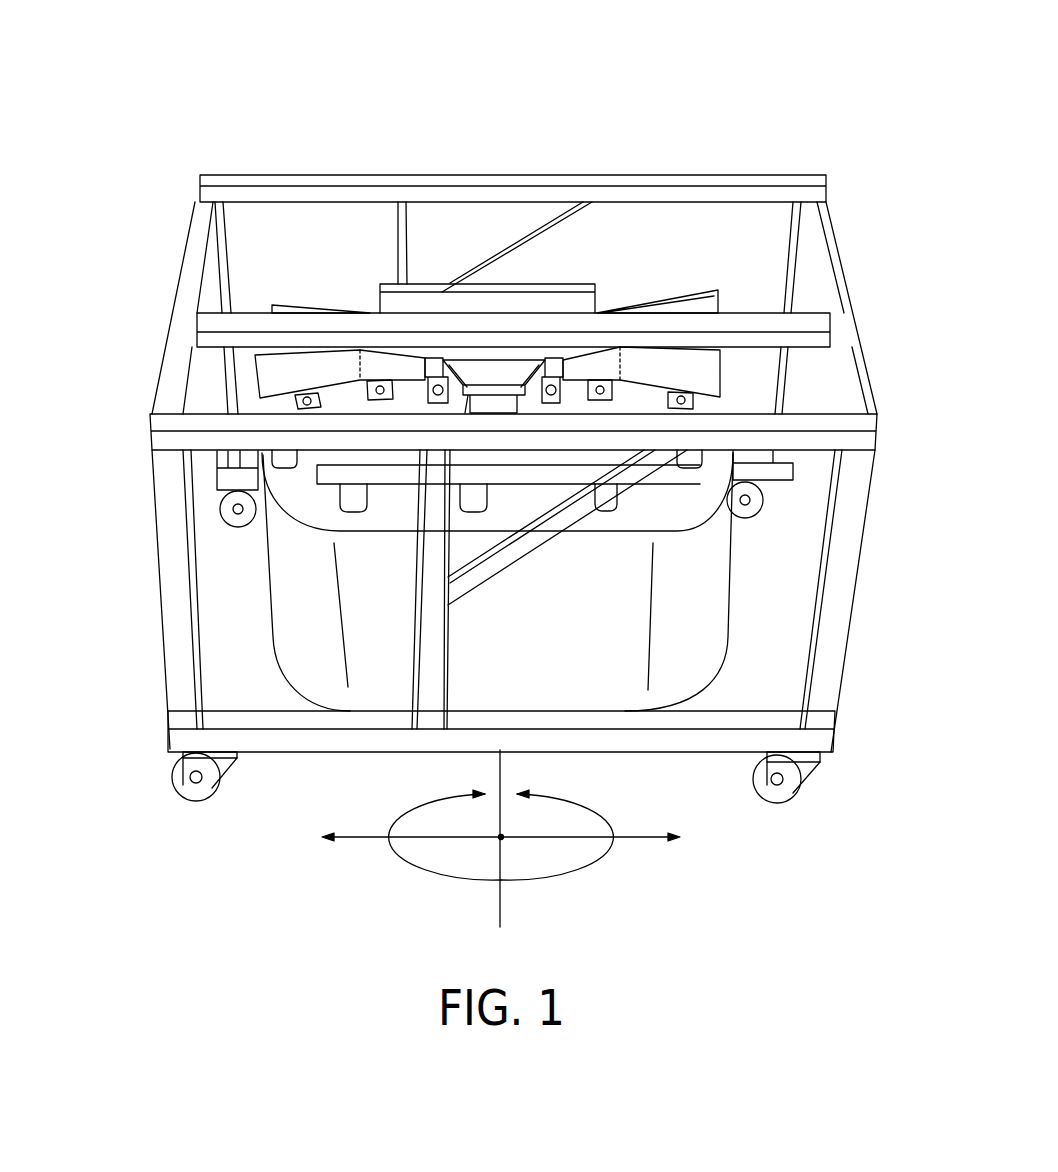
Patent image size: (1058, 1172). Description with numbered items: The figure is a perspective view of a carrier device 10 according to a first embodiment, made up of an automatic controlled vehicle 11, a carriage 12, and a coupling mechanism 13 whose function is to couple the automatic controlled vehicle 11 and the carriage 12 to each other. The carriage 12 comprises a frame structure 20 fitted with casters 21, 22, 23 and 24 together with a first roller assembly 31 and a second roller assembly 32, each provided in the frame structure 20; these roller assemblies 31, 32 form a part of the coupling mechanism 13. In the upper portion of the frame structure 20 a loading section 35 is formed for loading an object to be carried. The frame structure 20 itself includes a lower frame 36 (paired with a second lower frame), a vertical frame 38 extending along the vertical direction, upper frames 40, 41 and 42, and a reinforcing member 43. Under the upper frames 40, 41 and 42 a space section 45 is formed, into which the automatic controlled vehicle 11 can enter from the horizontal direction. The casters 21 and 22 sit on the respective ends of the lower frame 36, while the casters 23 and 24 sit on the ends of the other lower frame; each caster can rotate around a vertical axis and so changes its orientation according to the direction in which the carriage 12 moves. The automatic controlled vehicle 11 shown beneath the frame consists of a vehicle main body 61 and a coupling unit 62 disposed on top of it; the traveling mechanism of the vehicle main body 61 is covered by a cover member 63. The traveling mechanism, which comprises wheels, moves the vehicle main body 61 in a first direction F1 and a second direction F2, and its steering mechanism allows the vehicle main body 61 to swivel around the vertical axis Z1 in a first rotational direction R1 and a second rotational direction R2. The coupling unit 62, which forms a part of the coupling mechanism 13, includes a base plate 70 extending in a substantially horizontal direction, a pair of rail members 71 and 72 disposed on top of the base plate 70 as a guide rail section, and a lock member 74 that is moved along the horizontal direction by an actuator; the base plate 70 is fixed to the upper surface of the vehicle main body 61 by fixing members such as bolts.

The carrier device 10 is at (567, 90).
The automatic controlled vehicle 11 is at (655, 268).
The carriage 12 is at (307, 163).
The coupling mechanism 13 is at (244, 378).
The frame structure 20 is at (703, 768).
The caster 21 is at (777, 803).
The caster 22 is at (193, 800).
The caster 23 is at (758, 513).
The caster 24 is at (230, 530).
The first roller assembly 31 is at (558, 365).
The second roller assembly 32 is at (438, 365).
The loading section 35 is at (244, 252).
The lower frame 36 is at (284, 740).
The vertical frame 38 is at (170, 641).
The upper frame 40 is at (200, 447).
The upper frame 41 is at (353, 320).
The upper frame 42 is at (237, 182).
The reinforcing member 43 is at (540, 232).
The space section 45 is at (282, 621).
The vehicle main body 61 is at (270, 600).
The coupling unit 62 is at (387, 514).
The cover member 63 is at (707, 615).
The base plate 70 is at (553, 463).
The rail member 71 is at (660, 372).
The rail member 72 is at (667, 298).
The lock member 74 is at (520, 282).
The vertical axis Z1 is at (500, 768).
The first rotational direction R1 is at (592, 807).
The second rotational direction R2 is at (413, 810).
The first direction F1 is at (635, 842).
The second direction F2 is at (358, 842).